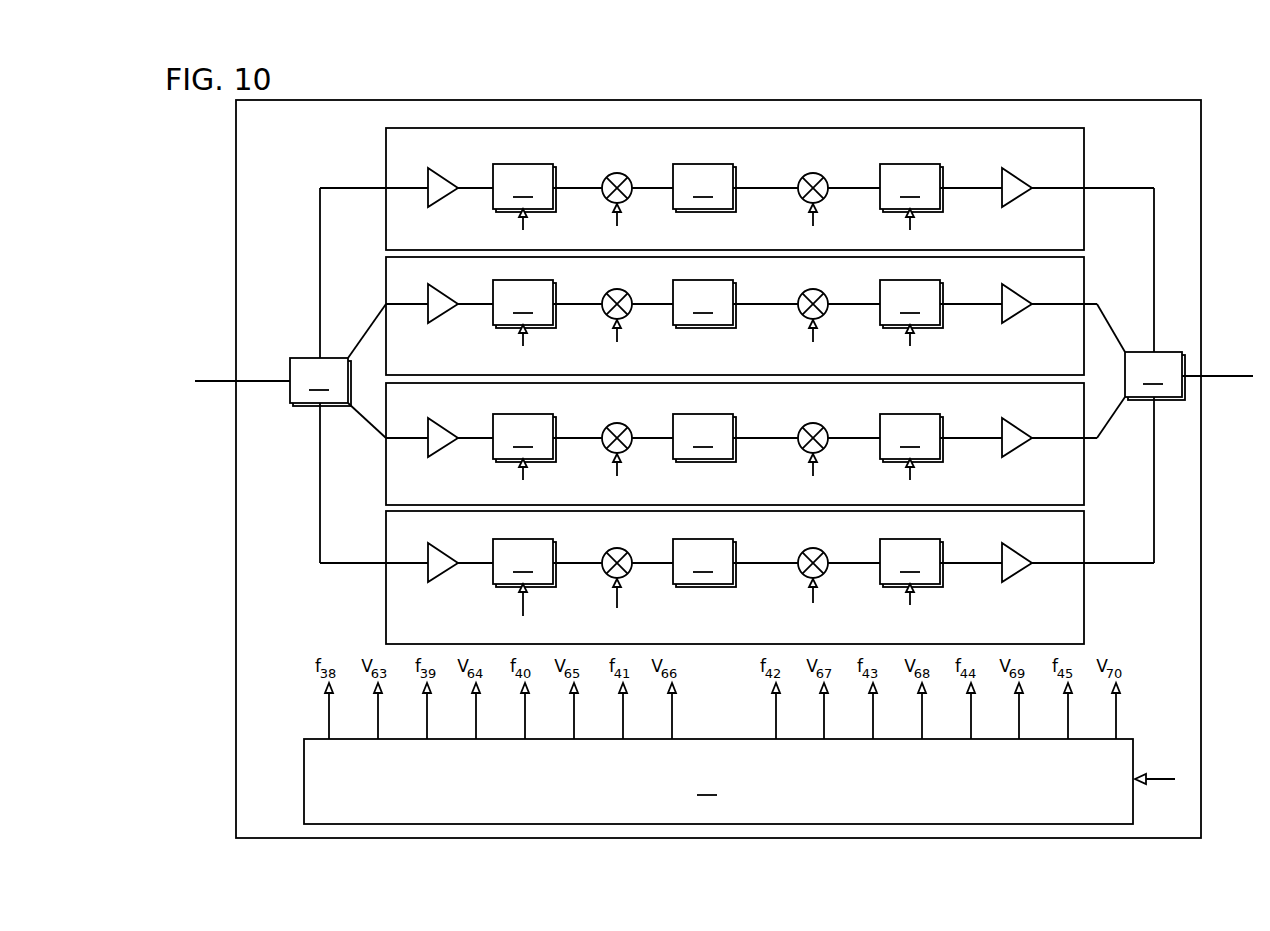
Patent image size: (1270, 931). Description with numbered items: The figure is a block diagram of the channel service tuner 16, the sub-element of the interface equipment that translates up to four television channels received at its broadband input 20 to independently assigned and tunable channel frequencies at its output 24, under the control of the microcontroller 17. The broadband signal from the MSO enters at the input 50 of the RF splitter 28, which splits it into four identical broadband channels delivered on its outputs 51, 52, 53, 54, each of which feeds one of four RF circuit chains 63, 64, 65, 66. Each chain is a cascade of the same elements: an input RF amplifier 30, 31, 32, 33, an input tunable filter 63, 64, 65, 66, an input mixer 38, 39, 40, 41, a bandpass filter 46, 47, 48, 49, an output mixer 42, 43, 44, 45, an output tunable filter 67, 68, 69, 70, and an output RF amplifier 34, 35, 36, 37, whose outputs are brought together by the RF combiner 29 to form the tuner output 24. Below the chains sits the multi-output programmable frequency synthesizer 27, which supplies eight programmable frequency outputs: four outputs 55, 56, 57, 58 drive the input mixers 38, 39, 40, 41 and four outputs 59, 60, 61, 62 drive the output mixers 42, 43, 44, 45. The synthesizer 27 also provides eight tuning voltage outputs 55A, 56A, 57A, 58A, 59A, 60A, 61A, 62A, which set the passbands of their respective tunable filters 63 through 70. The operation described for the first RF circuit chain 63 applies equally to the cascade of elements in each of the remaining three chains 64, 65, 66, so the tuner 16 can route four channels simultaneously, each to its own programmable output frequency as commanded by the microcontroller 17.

The channel service tuner 16 is at (1201, 100).
The microcontroller 17 is at (1168, 779).
The input 20 is at (234, 380).
The output 24 is at (1212, 370).
The multi-output programmable frequency synthesizer 27 is at (718, 781).
The RF splitter 28 is at (320, 382).
The RF combiner 29 is at (1155, 376).
The input RF amplifier 30 is at (445, 198).
The input RF amplifier 31 is at (445, 314).
The input RF amplifier 32 is at (445, 448).
The input RF amplifier 33 is at (445, 573).
The output RF amplifier 34 is at (1019, 198).
The output RF amplifier 35 is at (1019, 314).
The output RF amplifier 36 is at (1019, 448).
The output RF amplifier 37 is at (1019, 573).
The input mixer 38 is at (617, 172).
The input mixer 39 is at (617, 288).
The input mixer 40 is at (617, 422).
The input mixer 41 is at (617, 547).
The output mixer 42 is at (814, 172).
The output mixer 43 is at (804, 292).
The output mixer 44 is at (814, 422).
The output mixer 45 is at (812, 547).
The bandpass filter 46 is at (704, 188).
The bandpass filter 47 is at (704, 304).
The bandpass filter 48 is at (704, 438).
The bandpass filter 49 is at (704, 563).
The input of the RF splitter 50 is at (286, 386).
The RF splitter output 51 is at (318, 354).
The RF splitter output 52 is at (345, 355).
The RF splitter output 53 is at (356, 405).
The RF splitter output 54 is at (314, 412).
The programmable frequency output 55 is at (328, 739).
The tuning voltage output 55A is at (377, 739).
The programmable frequency output 56 is at (426, 739).
The tuning voltage output 56A is at (475, 739).
The programmable frequency output 57 is at (524, 739).
The tuning voltage output 57A is at (573, 739).
The programmable frequency output 58 is at (622, 739).
The tuning voltage output 58A is at (671, 739).
The programmable frequency output 59 is at (775, 739).
The tuning voltage output 59A is at (823, 739).
The programmable frequency output 60 is at (872, 739).
The tuning voltage output 60A is at (921, 739).
The programmable frequency output 61 is at (970, 739).
The tuning voltage output 61A is at (1018, 739).
The programmable frequency output 62 is at (1067, 739).
The tuning voltage output 62A is at (1115, 739).
The input tunable filter 63 is at (1084, 128).
The input tunable filter 64 is at (1084, 270).
The input tunable filter 65 is at (1084, 478).
The input tunable filter 66 is at (1084, 606).
The output tunable filter 67 is at (911, 208).
The output tunable filter 68 is at (911, 324).
The output tunable filter 69 is at (911, 458).
The output tunable filter 70 is at (911, 585).